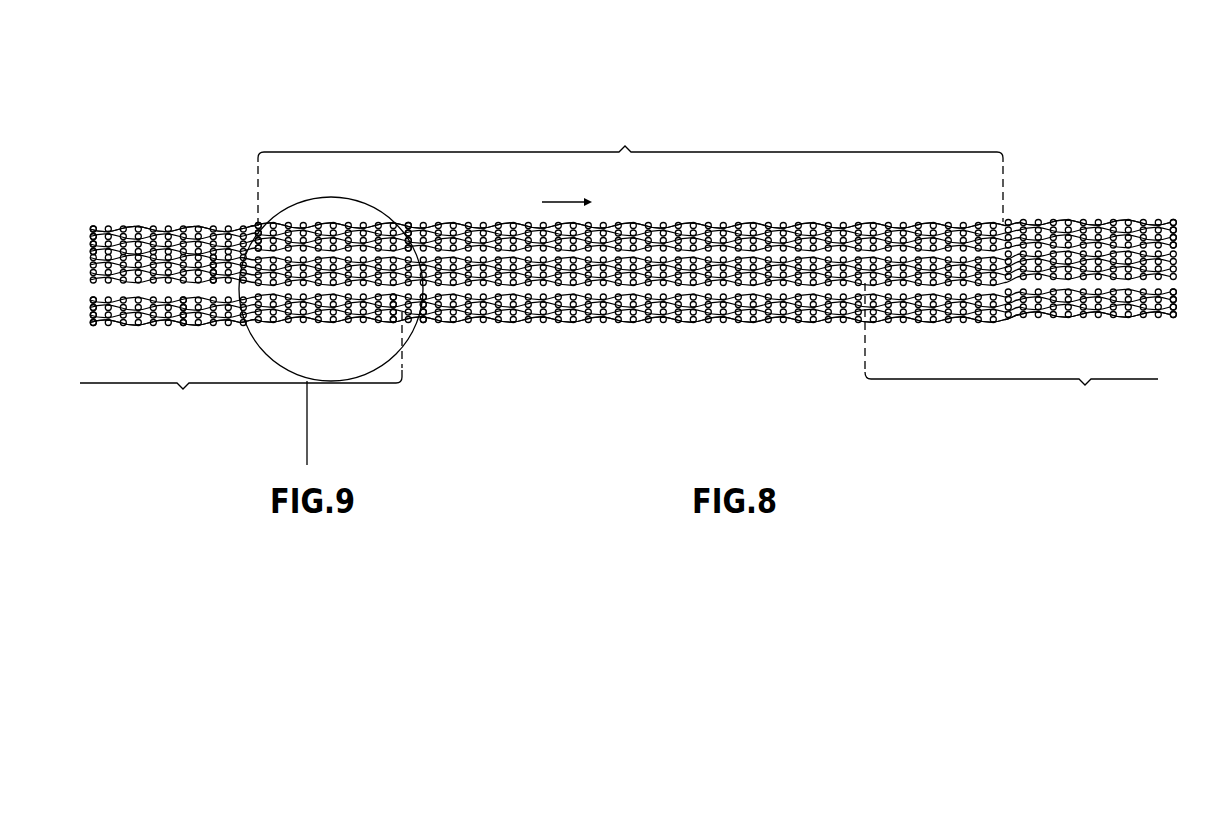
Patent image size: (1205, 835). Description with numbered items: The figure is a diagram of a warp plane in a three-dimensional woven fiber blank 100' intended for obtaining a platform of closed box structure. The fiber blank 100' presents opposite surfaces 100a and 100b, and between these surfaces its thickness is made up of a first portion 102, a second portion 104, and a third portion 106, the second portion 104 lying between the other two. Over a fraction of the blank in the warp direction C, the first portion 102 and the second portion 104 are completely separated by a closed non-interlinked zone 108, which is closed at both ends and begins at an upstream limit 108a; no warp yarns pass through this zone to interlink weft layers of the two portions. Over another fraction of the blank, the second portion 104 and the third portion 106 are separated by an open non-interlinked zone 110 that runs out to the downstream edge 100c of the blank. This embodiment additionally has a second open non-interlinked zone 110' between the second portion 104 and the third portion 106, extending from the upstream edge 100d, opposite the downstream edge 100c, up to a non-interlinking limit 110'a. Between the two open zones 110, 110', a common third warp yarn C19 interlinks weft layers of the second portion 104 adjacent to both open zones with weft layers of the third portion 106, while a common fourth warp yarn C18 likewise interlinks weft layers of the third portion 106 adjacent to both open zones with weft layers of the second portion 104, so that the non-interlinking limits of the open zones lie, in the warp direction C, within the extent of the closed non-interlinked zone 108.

The fiber blank 100' is at (618, 205).
The surface 100a is at (438, 218).
The surface 100b is at (471, 334).
The downstream edge 100c is at (1186, 232).
The upstream edge 100d is at (85, 218).
The first portion 102 is at (88, 226).
The second portion 104 is at (88, 255).
The third portion 106 is at (88, 297).
The closed non-interlinked zone 108 is at (630, 178).
The upstream limit 108a is at (257, 238).
The open non-interlinked zone 110 is at (1011, 347).
The second open non-interlinked zone 110' is at (241, 364).
The non-interlinking limit 110'a is at (363, 325).
The common fourth warp yarn C18 is at (168, 340).
The common third warp yarn C19 is at (212, 287).
The warp direction C is at (567, 193).